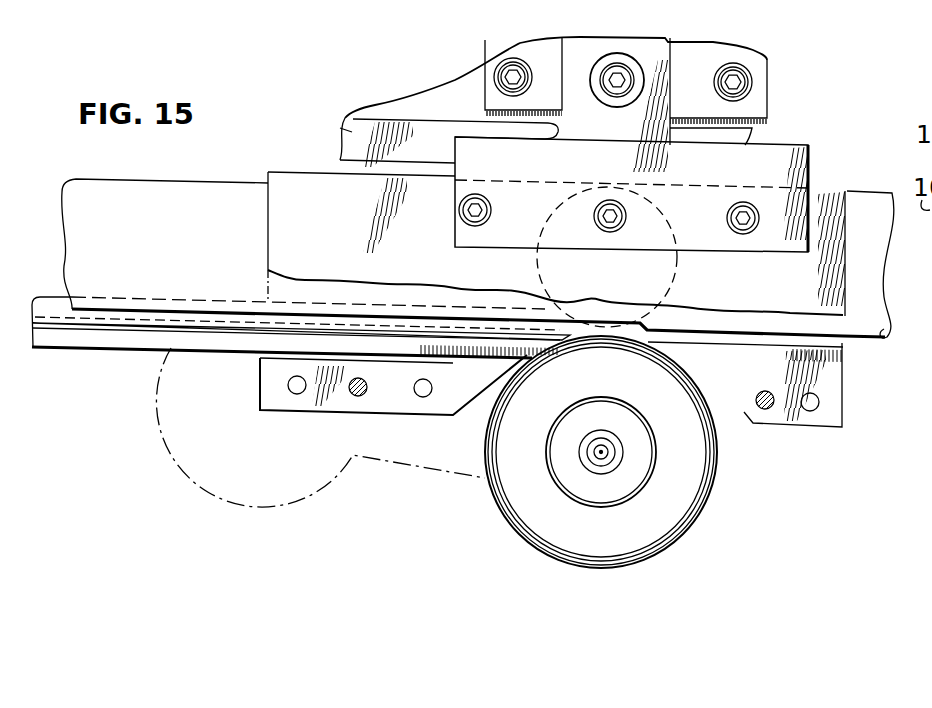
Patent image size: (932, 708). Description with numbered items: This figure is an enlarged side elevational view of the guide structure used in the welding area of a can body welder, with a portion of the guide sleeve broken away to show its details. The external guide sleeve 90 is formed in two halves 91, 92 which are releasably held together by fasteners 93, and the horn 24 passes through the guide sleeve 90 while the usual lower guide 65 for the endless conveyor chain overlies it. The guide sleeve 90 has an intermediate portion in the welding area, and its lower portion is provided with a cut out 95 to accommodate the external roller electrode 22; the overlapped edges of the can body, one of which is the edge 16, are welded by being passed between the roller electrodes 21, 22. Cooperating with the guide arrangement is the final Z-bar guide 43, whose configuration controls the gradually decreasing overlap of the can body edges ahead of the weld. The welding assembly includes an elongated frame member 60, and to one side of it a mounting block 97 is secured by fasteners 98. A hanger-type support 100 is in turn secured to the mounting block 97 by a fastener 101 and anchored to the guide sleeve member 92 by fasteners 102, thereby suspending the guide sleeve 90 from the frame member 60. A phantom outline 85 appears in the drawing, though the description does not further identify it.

The horn 24 is at (157, 174).
The Z-bar guide 43 is at (100, 356).
The guide sleeve half 91 is at (260, 388).
The fasteners 93 is at (350, 398).
The cut out 95 is at (752, 410).
The phantom circle 85 is at (418, 443).
The roller electrode 22 is at (712, 498).
The guide sleeve 90 is at (310, 186).
The guide sleeve half 92 is at (286, 240).
The roller electrode 21 is at (662, 278).
The support 100 is at (810, 167).
The fasteners 102 is at (593, 214).
The frame member 60 is at (426, 93).
The mounting block 97 is at (712, 50).
The fasteners 98 is at (513, 60).
The center socket head screw 101 is at (606, 54).
The lower guide 65 is at (348, 132).
The overlapped edge 16 is at (462, 270).